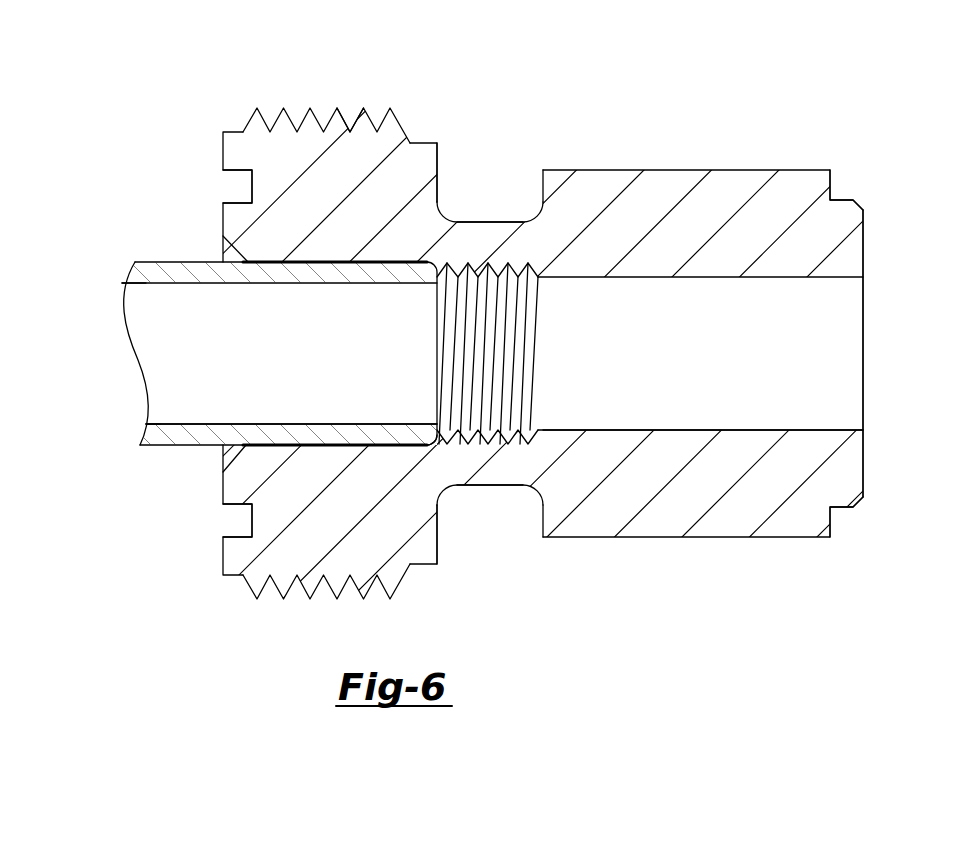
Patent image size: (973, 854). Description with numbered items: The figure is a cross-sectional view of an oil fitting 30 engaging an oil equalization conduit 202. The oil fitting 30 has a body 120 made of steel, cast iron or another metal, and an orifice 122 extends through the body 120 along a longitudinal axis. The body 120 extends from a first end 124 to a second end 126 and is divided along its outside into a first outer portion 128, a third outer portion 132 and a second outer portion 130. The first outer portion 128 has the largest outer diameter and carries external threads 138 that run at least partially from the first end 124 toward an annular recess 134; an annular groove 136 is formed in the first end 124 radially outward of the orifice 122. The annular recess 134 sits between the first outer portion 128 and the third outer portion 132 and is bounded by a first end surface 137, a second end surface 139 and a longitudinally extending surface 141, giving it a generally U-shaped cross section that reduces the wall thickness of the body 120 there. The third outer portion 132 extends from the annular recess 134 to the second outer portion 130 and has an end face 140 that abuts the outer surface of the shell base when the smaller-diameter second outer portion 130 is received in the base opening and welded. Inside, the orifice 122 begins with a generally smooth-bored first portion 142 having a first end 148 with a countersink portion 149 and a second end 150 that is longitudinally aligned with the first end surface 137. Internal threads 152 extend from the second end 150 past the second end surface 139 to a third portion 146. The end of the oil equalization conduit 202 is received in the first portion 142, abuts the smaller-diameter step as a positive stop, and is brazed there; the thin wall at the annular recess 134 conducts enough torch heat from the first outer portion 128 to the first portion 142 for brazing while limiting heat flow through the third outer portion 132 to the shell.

The oil fitting 30 is at (770, 124).
The body 120 is at (214, 150).
The orifice 122 is at (870, 422).
The first end 124 is at (223, 548).
The second end 126 is at (863, 248).
The first outer portion 128 is at (300, 98).
The second outer portion 130 is at (838, 198).
The third outer portion 132 is at (682, 170).
The annular recess 134 is at (502, 210).
The annular groove 136 is at (232, 178).
The first end surface 137 is at (447, 158).
The external threads 138 is at (348, 108).
The second end surface 139 is at (543, 184).
The end face 140 is at (832, 514).
The longitudinally extending surface 141 is at (477, 220).
The first portion 142 is at (320, 444).
The third portion 146 is at (808, 428).
The first end 148 is at (232, 259).
The countersink portion 149 is at (242, 452).
The second end 150 is at (434, 446).
The internal threads 152 is at (484, 444).
The oil equalization conduit 202 is at (144, 452).